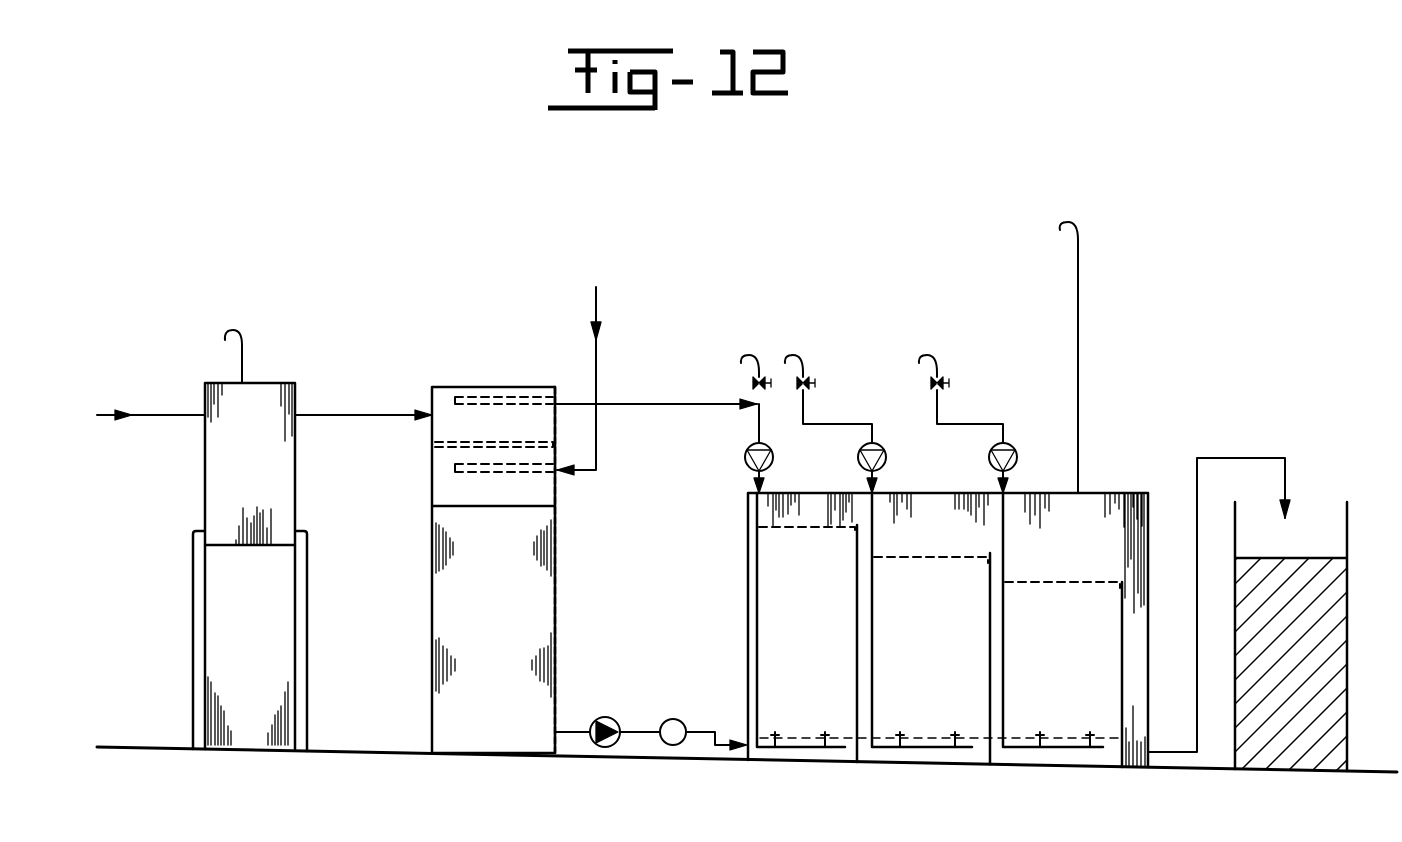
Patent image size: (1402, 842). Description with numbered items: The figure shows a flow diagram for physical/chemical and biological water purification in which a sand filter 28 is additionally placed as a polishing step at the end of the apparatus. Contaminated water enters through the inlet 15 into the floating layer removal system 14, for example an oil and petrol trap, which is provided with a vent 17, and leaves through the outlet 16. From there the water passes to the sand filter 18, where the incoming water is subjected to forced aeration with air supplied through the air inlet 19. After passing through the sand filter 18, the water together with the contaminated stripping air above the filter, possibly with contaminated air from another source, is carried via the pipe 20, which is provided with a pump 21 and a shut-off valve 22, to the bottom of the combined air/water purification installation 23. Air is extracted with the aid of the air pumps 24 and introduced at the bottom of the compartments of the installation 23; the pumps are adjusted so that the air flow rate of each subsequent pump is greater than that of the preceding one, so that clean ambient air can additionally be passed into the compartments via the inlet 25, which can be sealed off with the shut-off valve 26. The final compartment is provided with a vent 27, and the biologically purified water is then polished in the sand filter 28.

The floating layer removal system 14 is at (228, 456).
The inlet 15 is at (156, 413).
The outlet 16 is at (360, 413).
The vent 17 is at (236, 335).
The sand filter 18 is at (528, 588).
The air inlet 19 is at (600, 313).
The pipe 20 is at (645, 735).
The pump 21 is at (606, 748).
The shut-off valve 22 is at (678, 746).
The combined air/water purification installation 23 is at (800, 752).
The air pumps 24 is at (746, 457).
The inlet 25 is at (788, 356).
The shut-off valve 26 is at (752, 383).
The vent 27 is at (1076, 218).
The sand filter 28 is at (1330, 665).